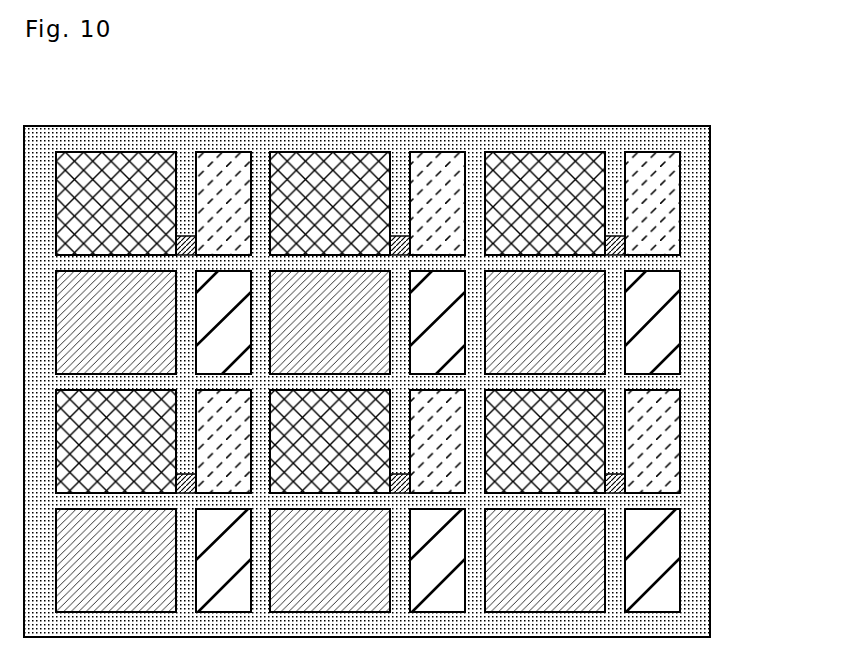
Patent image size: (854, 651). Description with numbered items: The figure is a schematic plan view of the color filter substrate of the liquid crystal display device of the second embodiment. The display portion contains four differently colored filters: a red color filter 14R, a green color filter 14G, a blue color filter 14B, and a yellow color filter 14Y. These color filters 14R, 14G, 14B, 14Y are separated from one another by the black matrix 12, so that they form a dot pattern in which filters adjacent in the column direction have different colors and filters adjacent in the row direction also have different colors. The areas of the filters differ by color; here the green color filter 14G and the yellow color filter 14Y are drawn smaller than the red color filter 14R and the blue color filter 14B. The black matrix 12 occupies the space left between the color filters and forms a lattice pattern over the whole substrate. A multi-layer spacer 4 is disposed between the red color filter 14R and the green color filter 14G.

The black matrix 12 is at (697, 175).
The red color filter 14R is at (95, 173).
The blue color filter 14B is at (132, 293).
The green color filter 14G is at (233, 173).
The yellow color filter 14Y is at (240, 293).
The multi-layer spacer 4 is at (398, 235).